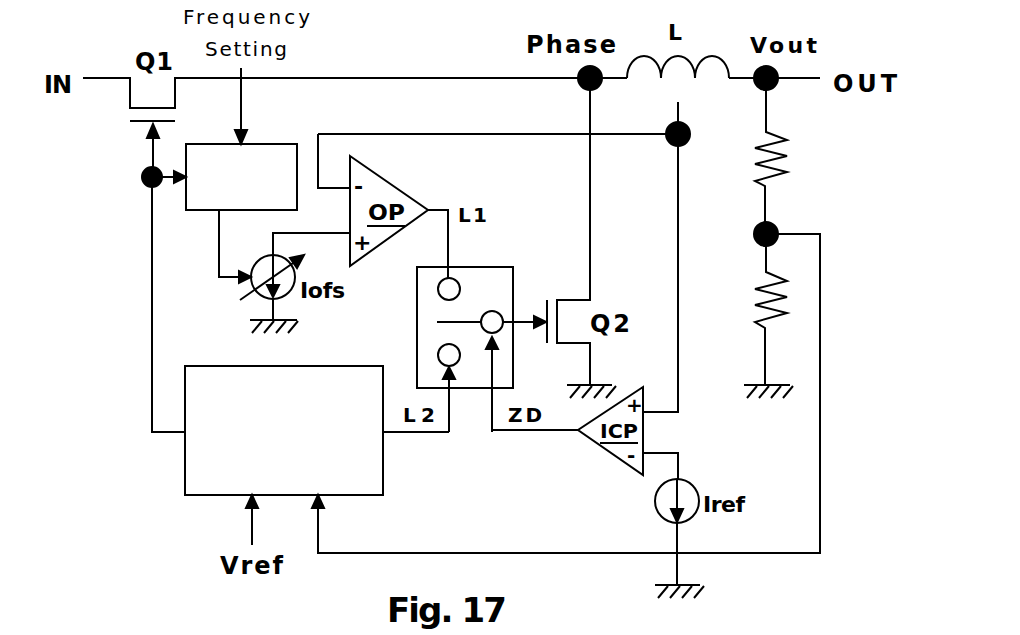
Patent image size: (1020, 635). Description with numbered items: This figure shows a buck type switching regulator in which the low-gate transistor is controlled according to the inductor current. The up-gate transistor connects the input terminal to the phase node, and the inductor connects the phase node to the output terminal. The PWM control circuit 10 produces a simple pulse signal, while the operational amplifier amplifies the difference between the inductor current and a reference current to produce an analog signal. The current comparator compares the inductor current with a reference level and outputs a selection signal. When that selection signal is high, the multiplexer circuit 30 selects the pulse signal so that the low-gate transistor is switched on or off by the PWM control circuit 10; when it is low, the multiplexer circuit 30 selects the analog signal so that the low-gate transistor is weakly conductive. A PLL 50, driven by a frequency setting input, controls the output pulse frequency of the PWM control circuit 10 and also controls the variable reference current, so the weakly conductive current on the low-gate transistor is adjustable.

The PWM control circuit 10 is at (302, 468).
The multiplexer circuit 30 is at (515, 278).
The PLL 50 is at (265, 144).